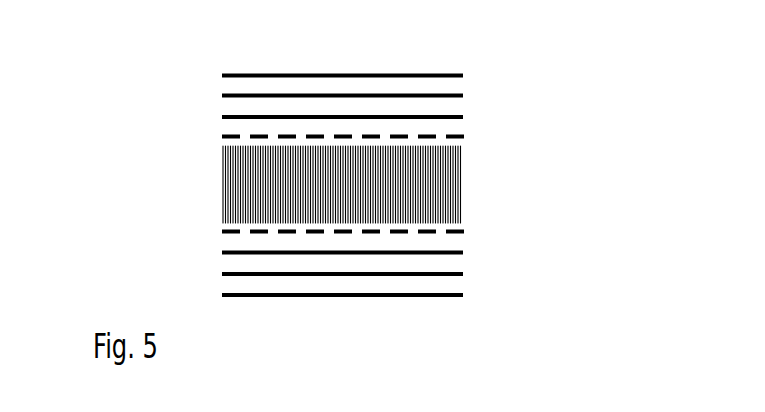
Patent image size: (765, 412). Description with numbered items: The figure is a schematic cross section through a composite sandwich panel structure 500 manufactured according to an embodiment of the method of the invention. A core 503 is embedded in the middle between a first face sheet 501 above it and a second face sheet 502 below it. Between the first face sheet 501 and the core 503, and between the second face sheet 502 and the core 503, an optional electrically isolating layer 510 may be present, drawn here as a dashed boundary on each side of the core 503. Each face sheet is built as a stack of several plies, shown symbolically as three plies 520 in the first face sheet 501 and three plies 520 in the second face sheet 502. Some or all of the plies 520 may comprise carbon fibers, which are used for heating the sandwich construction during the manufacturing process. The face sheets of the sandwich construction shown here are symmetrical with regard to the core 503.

The composite sandwich panel structure 500 is at (345, 56).
The first face sheet 501 is at (208, 138).
The second face sheet 502 is at (208, 296).
The core 503 is at (208, 224).
The electrically isolating layer 510 is at (470, 222).
The plies 520 is at (350, 180).